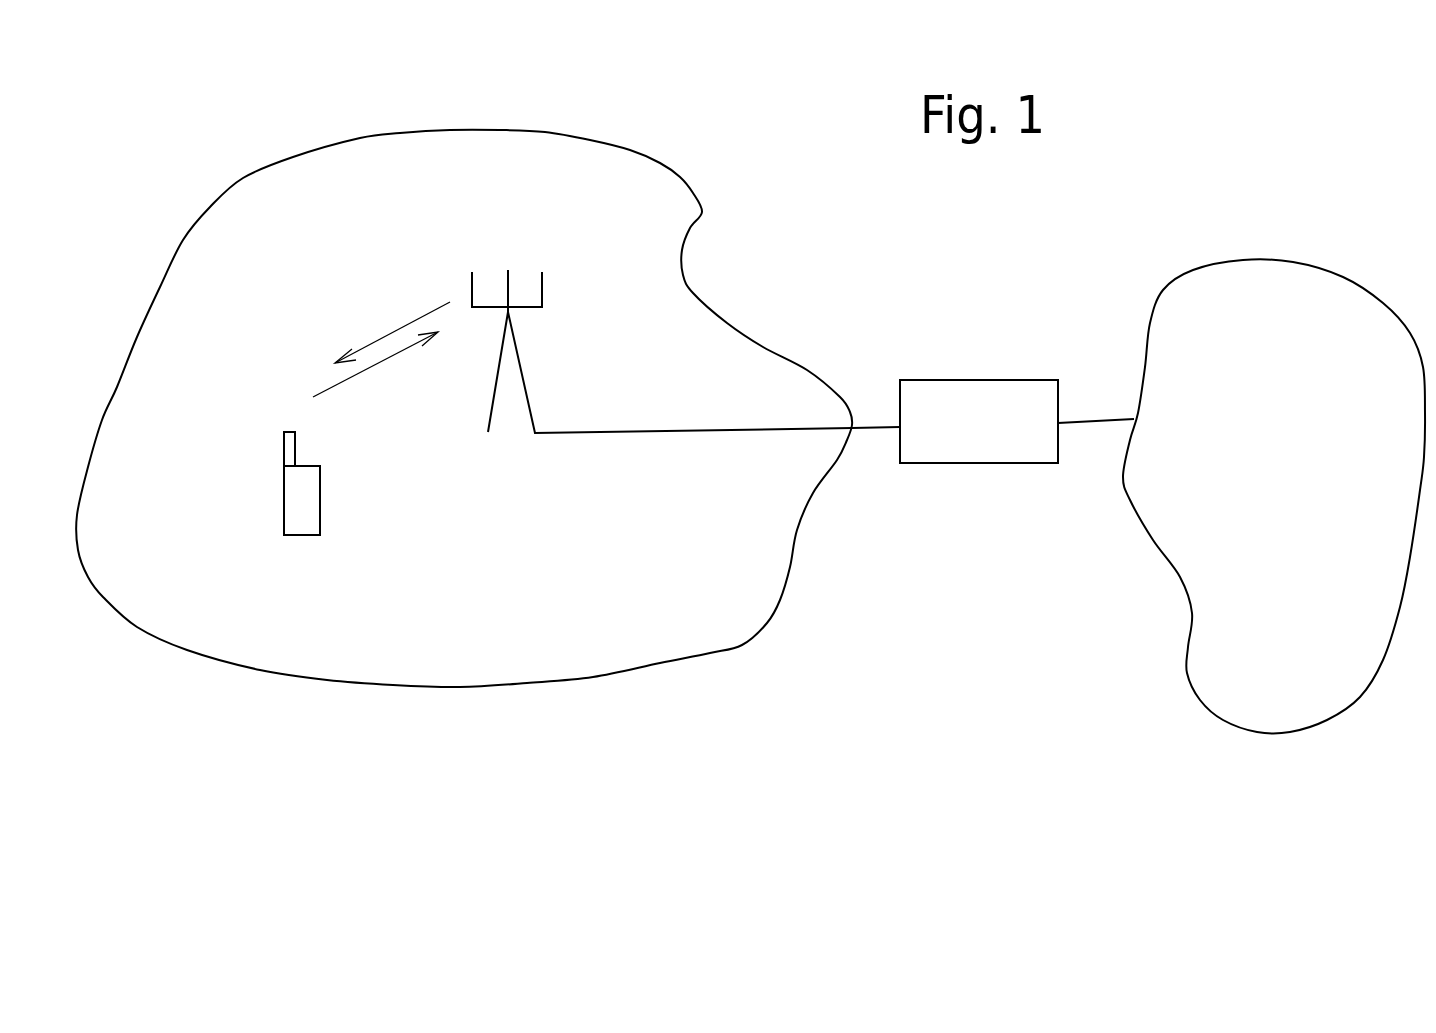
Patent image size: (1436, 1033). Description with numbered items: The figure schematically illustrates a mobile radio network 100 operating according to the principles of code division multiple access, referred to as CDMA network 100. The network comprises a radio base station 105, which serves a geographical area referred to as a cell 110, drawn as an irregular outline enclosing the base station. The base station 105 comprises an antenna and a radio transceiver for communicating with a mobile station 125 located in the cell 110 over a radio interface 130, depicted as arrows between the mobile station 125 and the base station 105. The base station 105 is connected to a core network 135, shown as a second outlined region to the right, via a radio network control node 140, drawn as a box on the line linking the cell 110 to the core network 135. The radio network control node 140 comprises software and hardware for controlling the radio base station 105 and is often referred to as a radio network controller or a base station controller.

The mobile radio network 100 is at (1037, 766).
The radio base station 105 is at (522, 365).
The cell 110 is at (464, 429).
The mobile station 125 is at (292, 537).
The radio interface 130 is at (368, 343).
The core network 135 is at (1272, 262).
The radio network control node 140 is at (963, 463).